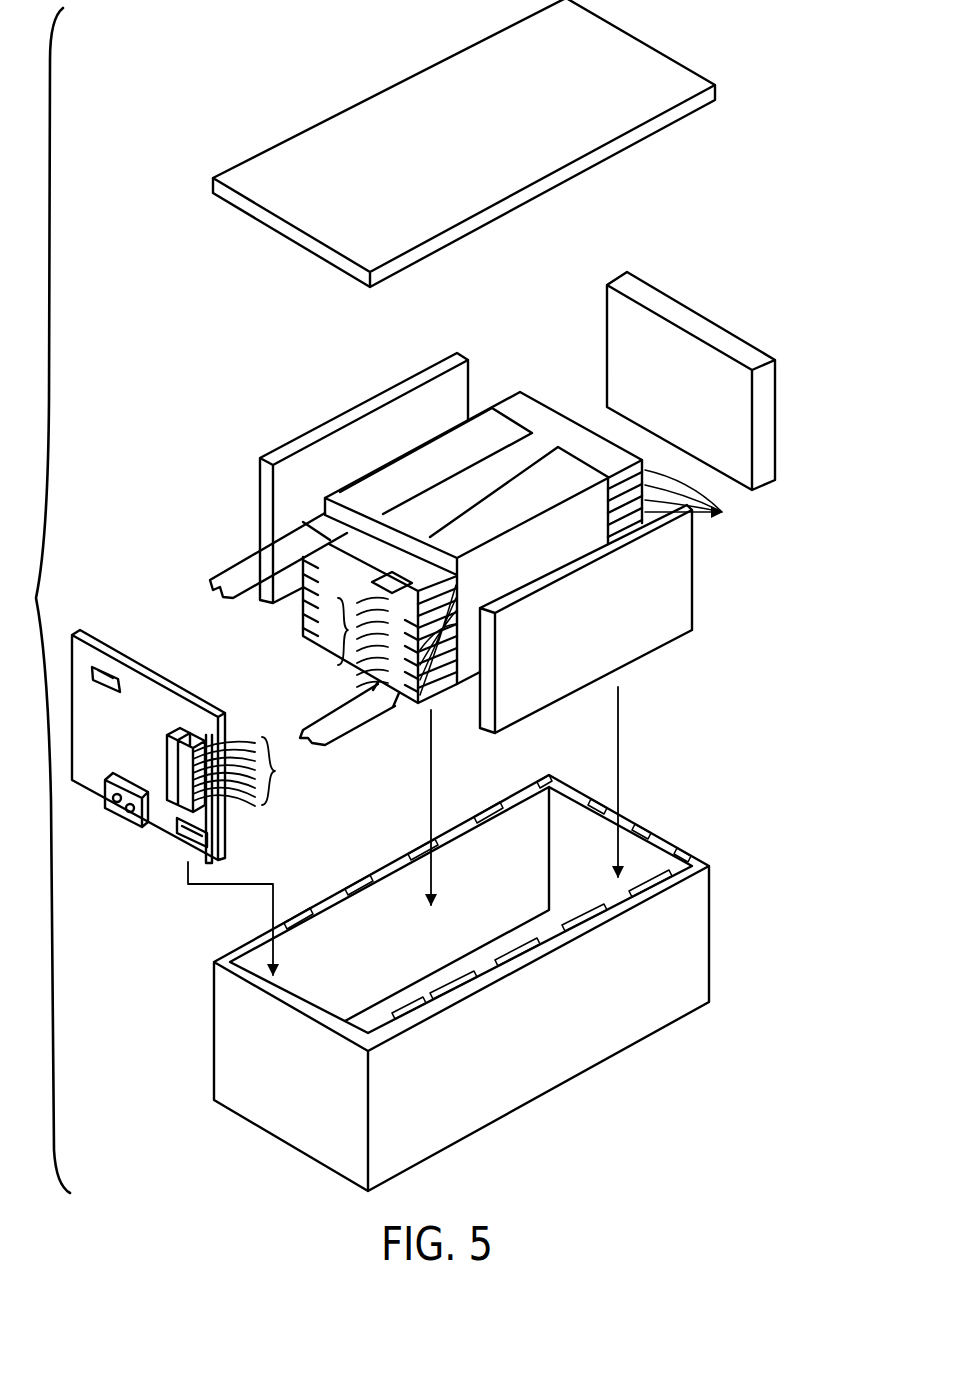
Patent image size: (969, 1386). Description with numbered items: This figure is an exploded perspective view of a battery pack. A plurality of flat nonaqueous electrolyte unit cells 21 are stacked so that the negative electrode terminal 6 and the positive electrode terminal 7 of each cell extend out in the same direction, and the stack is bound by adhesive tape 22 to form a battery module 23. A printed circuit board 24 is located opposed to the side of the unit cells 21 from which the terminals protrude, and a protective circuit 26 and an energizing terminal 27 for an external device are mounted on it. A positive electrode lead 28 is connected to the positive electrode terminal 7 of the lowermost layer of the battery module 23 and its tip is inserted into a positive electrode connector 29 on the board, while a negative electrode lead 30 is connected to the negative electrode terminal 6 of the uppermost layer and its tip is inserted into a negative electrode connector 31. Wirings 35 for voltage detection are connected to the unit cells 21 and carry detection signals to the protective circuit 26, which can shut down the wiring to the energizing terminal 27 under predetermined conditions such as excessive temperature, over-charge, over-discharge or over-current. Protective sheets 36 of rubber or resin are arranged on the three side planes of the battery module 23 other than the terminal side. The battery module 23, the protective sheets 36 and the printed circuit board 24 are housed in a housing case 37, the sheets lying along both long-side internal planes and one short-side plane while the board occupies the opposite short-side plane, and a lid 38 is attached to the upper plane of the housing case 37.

The negative electrode terminal 6 is at (300, 525).
The positive electrode terminal 7 is at (390, 593).
The unit cells 21 is at (696, 498).
The adhesive tape 22 is at (547, 478).
The battery module 23 is at (412, 450).
The printed circuit board 24 is at (104, 634).
The protective circuit 26 is at (182, 737).
The energizing terminal 27 is at (130, 817).
The positive electrode lead 28 is at (347, 725).
The positive electrode connector 29 is at (205, 840).
The negative electrode lead 30 is at (228, 572).
The negative electrode connector 31 is at (113, 678).
The wirings for voltage detection 35 is at (330, 630).
The protective sheets 36 is at (328, 432).
The housing case 37 is at (695, 944).
The lid 38 is at (655, 68).